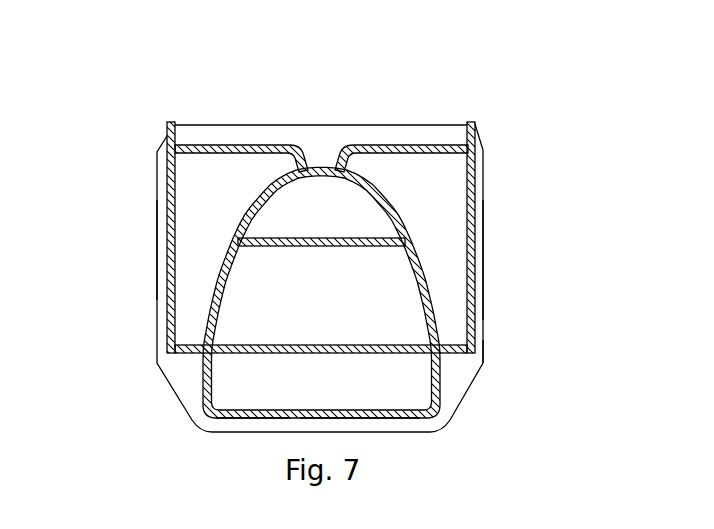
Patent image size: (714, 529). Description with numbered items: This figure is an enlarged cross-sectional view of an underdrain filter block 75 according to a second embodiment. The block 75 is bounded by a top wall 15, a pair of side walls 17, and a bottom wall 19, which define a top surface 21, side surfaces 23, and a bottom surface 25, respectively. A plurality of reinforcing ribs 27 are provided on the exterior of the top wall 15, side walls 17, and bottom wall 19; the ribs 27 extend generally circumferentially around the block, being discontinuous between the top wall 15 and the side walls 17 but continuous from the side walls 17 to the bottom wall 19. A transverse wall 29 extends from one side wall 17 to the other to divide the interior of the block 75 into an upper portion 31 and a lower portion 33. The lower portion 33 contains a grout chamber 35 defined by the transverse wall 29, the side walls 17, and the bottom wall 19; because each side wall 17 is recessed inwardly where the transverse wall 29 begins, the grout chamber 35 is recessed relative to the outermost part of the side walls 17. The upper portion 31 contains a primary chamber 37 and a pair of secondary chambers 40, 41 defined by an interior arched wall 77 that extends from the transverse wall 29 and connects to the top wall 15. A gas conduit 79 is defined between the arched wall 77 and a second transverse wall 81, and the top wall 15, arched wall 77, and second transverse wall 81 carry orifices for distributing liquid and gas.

The underdrain filter block 75 is at (112, 156).
The side surfaces 23 is at (166, 124).
The top wall 15 is at (200, 144).
The top surface 21 is at (283, 147).
The reinforcing ribs 27 is at (352, 132).
The upper portion 31 is at (515, 176).
The side walls 17 is at (157, 207).
The second transverse wall 81 is at (367, 240).
The interior arched wall 77 is at (420, 262).
The lower portion 33 is at (512, 402).
The bottom wall 19 is at (395, 418).
The transverse wall 29 is at (237, 352).
The bottom surface 25 is at (224, 420).
The secondary chamber 40 is at (231, 194).
The secondary chamber 41 is at (433, 194).
The gas conduit 79 is at (333, 224).
The primary chamber 37 is at (340, 314).
The grout chamber 35 is at (350, 396).